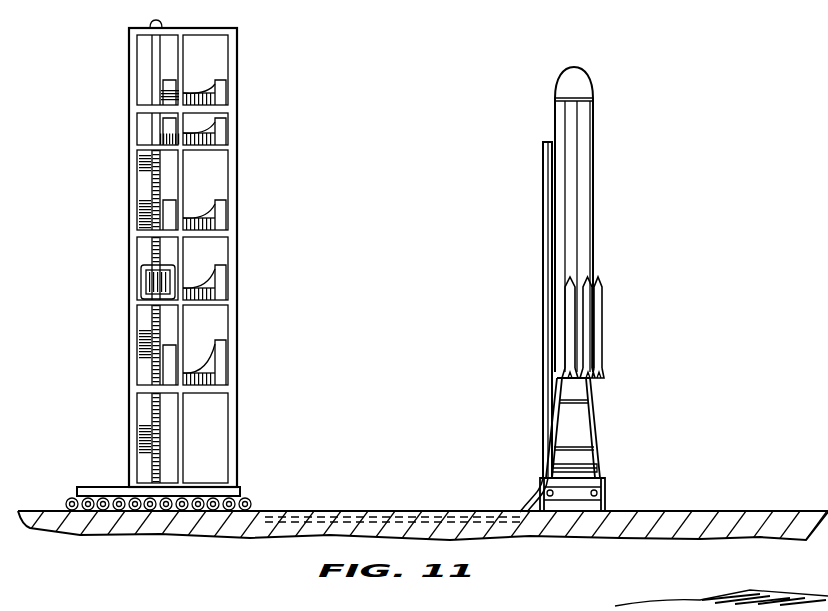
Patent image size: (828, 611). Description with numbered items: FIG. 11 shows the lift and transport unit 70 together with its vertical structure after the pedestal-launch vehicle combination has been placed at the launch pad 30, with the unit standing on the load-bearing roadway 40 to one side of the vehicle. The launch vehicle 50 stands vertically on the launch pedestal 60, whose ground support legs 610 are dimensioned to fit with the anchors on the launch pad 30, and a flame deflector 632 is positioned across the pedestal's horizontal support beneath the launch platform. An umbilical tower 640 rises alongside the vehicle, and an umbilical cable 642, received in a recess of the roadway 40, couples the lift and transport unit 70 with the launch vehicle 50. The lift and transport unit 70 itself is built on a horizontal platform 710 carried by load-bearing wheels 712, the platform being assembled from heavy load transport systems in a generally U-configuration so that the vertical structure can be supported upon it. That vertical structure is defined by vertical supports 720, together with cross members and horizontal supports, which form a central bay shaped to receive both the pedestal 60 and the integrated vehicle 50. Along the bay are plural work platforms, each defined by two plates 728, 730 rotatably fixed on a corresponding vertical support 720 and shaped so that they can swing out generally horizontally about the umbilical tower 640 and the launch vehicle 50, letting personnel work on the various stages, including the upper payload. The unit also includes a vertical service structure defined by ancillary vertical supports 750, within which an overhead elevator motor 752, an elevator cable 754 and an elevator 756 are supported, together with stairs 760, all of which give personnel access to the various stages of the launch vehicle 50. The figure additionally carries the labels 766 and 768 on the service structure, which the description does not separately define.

The launch pad 30 is at (690, 510).
The load-bearing roadway 40 is at (42, 511).
The launch vehicle 50 is at (593, 130).
The launch pedestal 60 is at (596, 428).
The lift and transport unit 70 is at (195, 257).
The ground support legs 610 is at (603, 502).
The flame deflector 632 is at (582, 468).
The umbilical tower 640 is at (543, 216).
The umbilical cable 642 is at (410, 515).
The horizontal platform 710 is at (92, 487).
The load-bearing wheels 712 is at (68, 498).
The vertical supports 720 is at (237, 50).
The plate 728 is at (226, 95).
The plate 730 is at (222, 360).
The ancillary vertical supports 750 is at (129, 56).
The overhead elevator motor 752 is at (160, 22).
The elevator cable 754 is at (176, 88).
The elevator 756 is at (141, 262).
The stairs 760 is at (139, 163).
The panel 766 is at (139, 218).
The panel 768 is at (130, 188).